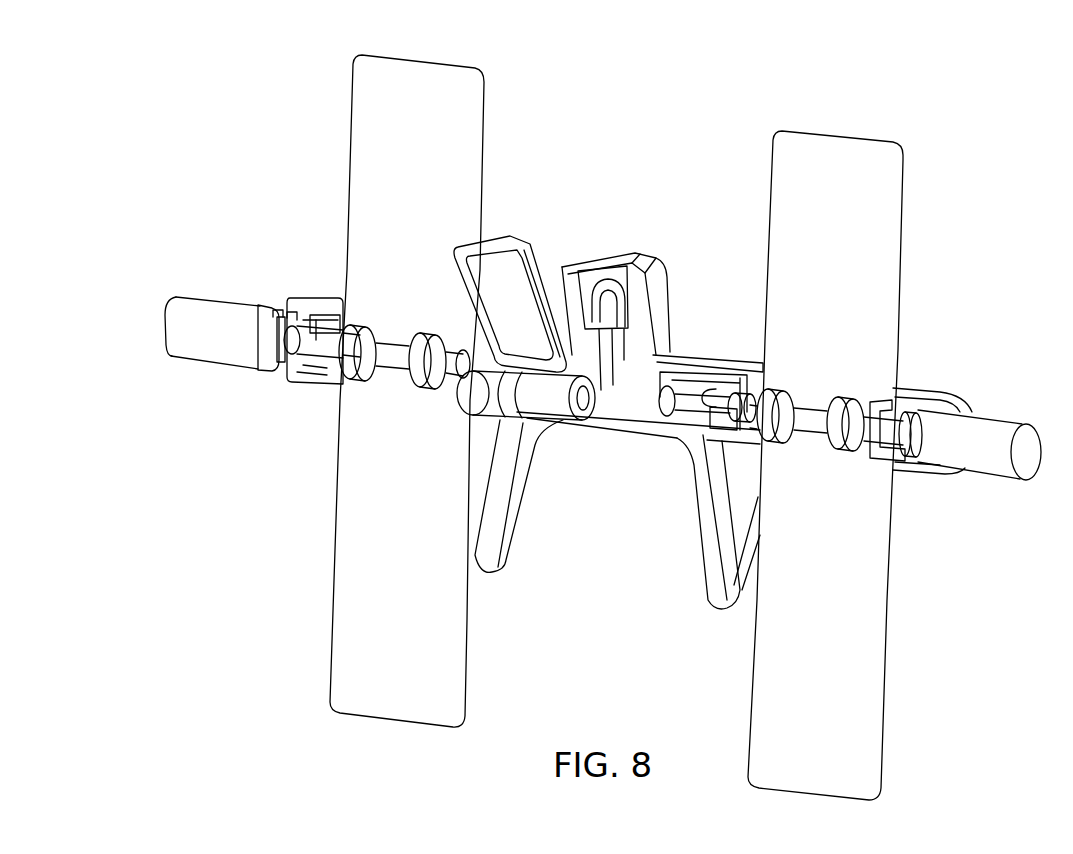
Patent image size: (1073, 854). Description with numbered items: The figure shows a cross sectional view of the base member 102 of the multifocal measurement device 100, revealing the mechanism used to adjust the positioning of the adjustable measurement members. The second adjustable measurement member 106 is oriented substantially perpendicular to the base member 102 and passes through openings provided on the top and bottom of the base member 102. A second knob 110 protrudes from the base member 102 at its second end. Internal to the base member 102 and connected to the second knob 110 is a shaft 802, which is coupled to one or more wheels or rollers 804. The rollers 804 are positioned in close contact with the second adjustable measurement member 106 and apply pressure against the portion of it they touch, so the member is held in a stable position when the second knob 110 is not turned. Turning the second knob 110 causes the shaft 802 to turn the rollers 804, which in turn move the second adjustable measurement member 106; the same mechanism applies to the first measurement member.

The multifocal measurement device 100 is at (309, 77).
The base member 102 is at (318, 297).
The second adjustable measurement member 106 is at (880, 162).
The second knob 110 is at (1003, 419).
The shaft 802 is at (887, 422).
The rollers 804 is at (845, 405).